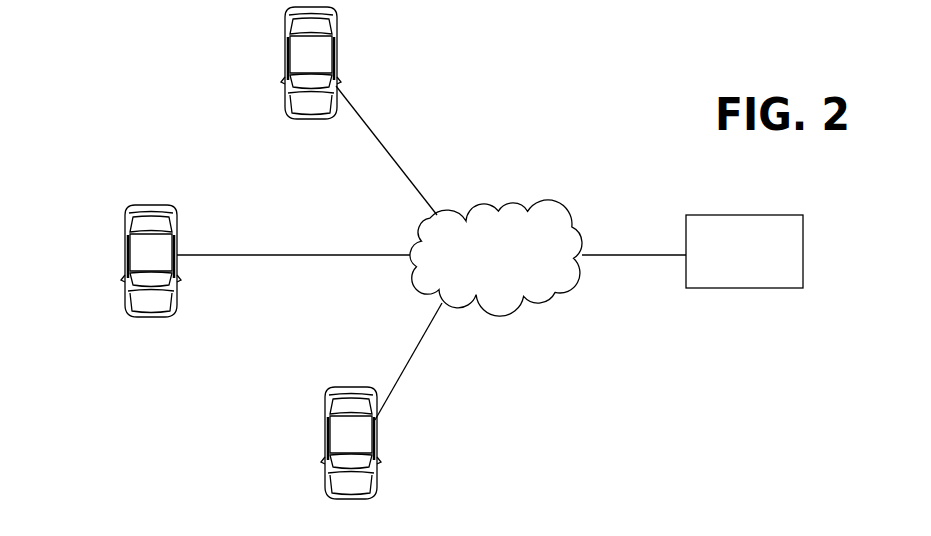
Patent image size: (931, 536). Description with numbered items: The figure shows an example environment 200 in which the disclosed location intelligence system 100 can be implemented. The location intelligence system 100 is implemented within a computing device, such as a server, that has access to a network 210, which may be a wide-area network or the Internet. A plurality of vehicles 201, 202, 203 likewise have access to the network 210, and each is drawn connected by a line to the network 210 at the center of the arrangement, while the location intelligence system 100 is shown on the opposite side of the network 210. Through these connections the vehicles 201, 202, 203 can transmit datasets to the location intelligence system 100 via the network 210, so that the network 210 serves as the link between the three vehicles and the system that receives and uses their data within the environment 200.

The location intelligence system 100 is at (762, 263).
The environment 200 is at (613, 390).
The vehicle 201 is at (290, 57).
The vehicle 202 is at (125, 240).
The vehicle 203 is at (325, 437).
The network 210 is at (510, 265).